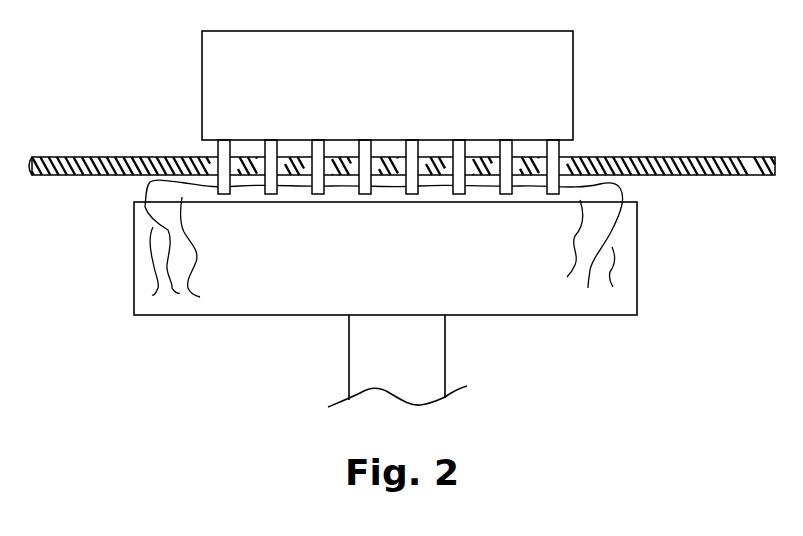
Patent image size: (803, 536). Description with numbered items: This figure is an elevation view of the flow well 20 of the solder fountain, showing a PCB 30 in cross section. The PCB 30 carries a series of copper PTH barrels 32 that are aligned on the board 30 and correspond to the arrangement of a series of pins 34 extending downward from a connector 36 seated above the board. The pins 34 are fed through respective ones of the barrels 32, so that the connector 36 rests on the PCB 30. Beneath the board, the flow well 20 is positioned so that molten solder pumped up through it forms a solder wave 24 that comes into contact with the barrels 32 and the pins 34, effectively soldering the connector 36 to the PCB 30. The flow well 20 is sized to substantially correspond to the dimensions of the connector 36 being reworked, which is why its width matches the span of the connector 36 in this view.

The flow well 20 is at (652, 272).
The solder wave 24 is at (432, 190).
The PCB 30 is at (670, 157).
The copper PTH barrels 32 is at (213, 155).
The pins 34 is at (556, 163).
The connector 36 is at (522, 40).